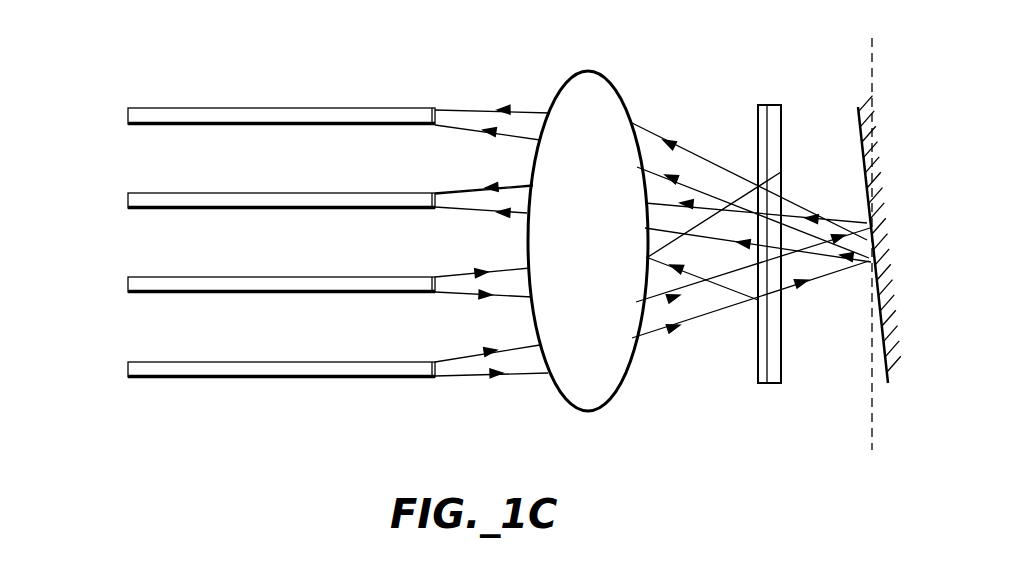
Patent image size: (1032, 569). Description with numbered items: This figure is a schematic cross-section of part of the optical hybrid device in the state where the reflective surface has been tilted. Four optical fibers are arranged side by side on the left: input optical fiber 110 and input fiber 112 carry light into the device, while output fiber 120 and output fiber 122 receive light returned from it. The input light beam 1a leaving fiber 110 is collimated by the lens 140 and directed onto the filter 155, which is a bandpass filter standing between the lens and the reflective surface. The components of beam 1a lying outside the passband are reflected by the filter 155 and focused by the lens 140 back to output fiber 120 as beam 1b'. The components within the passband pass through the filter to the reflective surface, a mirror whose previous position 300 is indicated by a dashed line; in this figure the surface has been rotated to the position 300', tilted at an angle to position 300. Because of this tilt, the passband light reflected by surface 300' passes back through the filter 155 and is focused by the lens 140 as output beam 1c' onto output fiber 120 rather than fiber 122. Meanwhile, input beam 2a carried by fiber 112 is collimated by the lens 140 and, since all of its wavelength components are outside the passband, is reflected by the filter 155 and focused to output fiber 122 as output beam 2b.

The output fiber 122 is at (128, 112).
The output fiber 120 is at (128, 197).
The input fiber 112 is at (128, 281).
The input optical fiber 110 is at (128, 366).
The lens 140 is at (618, 386).
The filter 155 is at (772, 104).
The reflective surface (mirror) 300 is at (834, 231).
The tilted position of reflective surface 300' is at (850, 250).
The input light beam 1a is at (485, 365).
The reflected output beam 1b' is at (481, 224).
The output beam 1c' is at (476, 165).
The input beam 2a is at (517, 285).
The output beam 2b is at (535, 123).